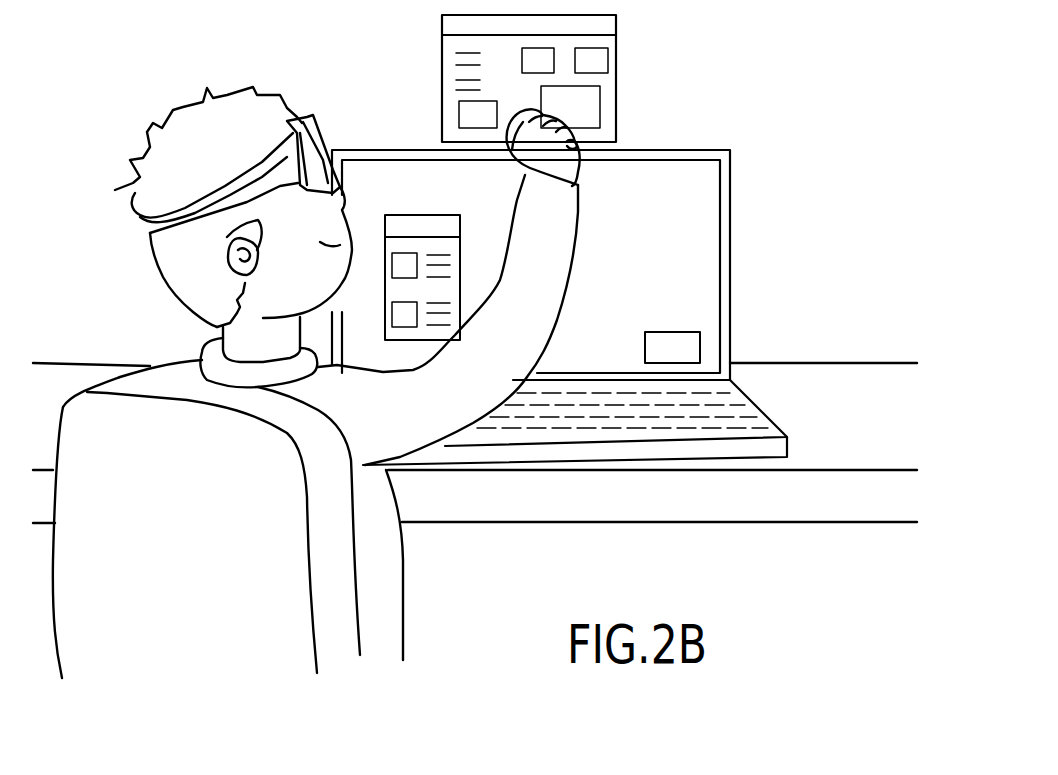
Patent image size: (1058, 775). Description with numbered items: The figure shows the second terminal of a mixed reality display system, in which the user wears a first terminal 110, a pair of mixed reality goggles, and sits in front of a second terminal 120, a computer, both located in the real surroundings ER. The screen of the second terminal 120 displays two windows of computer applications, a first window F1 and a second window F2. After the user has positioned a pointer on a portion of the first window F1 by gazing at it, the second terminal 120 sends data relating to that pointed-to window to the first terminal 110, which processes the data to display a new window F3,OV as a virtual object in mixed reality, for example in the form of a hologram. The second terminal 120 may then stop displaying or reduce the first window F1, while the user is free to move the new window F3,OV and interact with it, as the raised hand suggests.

The first terminal 110 is at (303, 132).
The second terminal 120 is at (725, 235).
The first window F1 is at (677, 350).
The second window F2 is at (418, 226).
The new window / virtual object F3,OV is at (575, 94).
The real surroundings ER is at (803, 132).